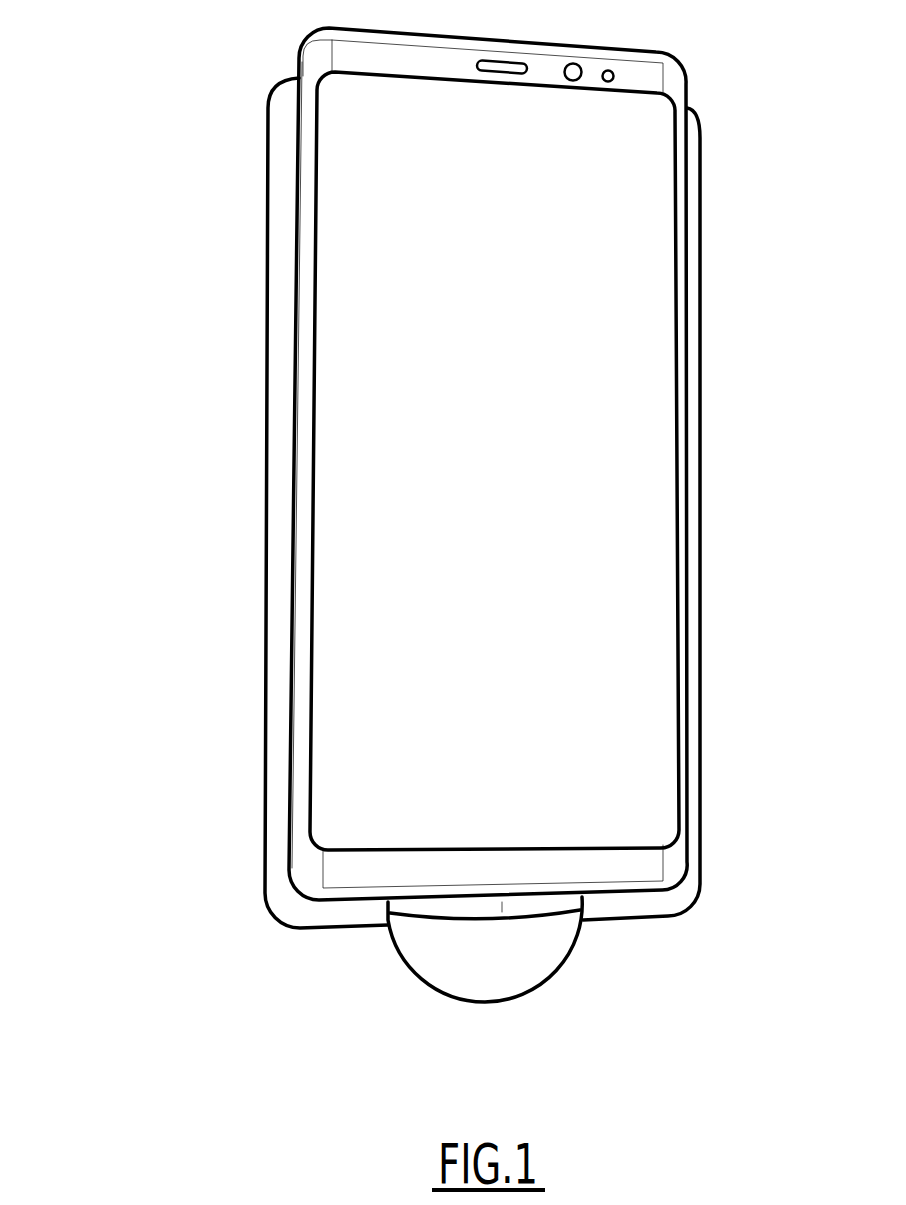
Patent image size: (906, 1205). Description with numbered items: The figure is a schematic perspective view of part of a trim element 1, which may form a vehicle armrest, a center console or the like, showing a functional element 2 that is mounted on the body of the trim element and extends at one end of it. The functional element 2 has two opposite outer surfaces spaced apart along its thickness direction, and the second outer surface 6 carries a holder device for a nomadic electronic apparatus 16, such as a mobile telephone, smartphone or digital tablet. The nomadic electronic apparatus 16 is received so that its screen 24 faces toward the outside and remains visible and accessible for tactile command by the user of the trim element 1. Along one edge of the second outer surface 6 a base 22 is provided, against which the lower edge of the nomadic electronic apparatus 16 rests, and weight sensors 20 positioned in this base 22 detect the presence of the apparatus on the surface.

The trim element 1 is at (128, 360).
The functional element 2 is at (277, 598).
The second outer surface 6 is at (293, 445).
The nomadic electronic apparatus 16 is at (570, 373).
The screen 24 is at (367, 283).
The weight sensors 20 is at (437, 902).
The base 22 is at (507, 962).